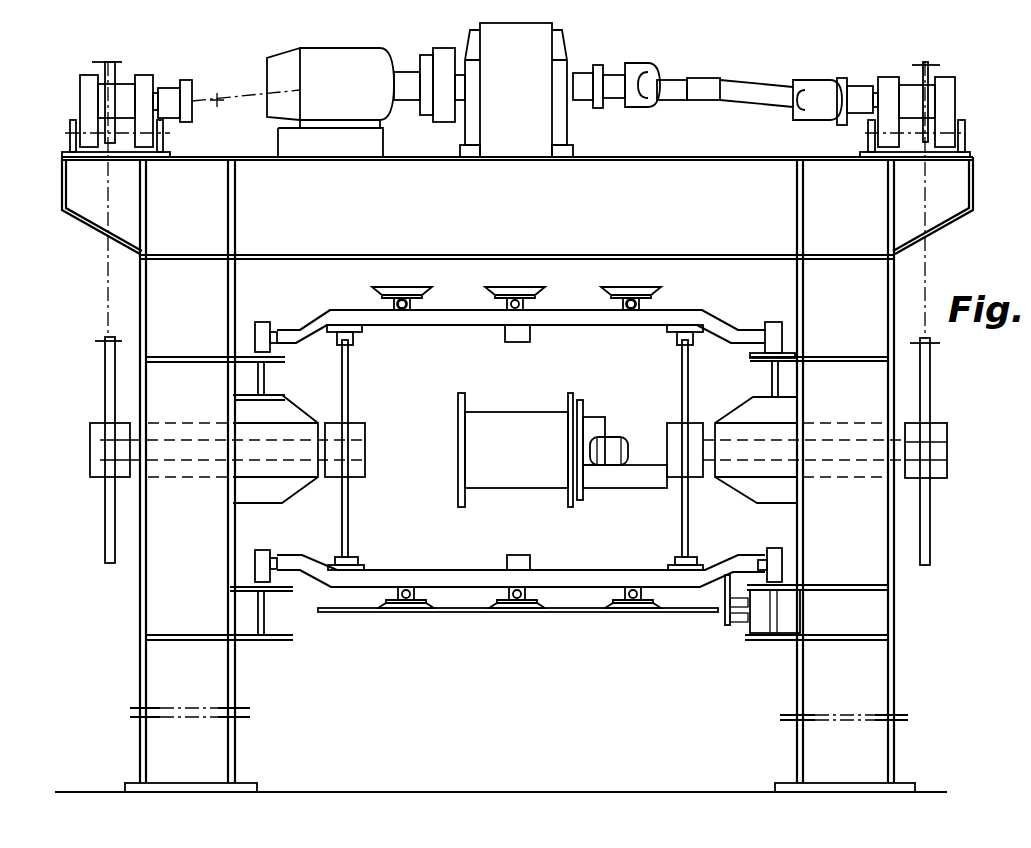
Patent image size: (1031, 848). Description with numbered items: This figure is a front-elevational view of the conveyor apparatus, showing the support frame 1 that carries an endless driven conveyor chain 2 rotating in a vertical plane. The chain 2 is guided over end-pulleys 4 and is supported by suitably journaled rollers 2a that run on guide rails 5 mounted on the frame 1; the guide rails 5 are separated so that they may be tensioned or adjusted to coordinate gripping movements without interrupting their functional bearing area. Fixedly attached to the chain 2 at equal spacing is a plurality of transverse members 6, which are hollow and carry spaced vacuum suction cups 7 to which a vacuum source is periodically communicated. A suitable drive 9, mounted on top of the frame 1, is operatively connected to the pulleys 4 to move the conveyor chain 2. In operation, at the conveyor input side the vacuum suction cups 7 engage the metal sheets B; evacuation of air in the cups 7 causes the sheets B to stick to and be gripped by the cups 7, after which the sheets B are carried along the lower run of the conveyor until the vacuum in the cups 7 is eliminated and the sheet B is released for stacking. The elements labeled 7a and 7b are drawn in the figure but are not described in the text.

The support frame 1 is at (525, 225).
The conveyor chain 2 is at (360, 560).
The rollers 2a is at (772, 322).
The end-pulley 4 is at (348, 400).
The guide rails 5 is at (778, 350).
The transverse members 6 is at (451, 327).
The vacuum suction cups 7 is at (541, 299).
The stop block 7a is at (527, 345).
The roller 7b is at (403, 311).
The drive 9 is at (352, 94).
The metal sheets B is at (463, 612).